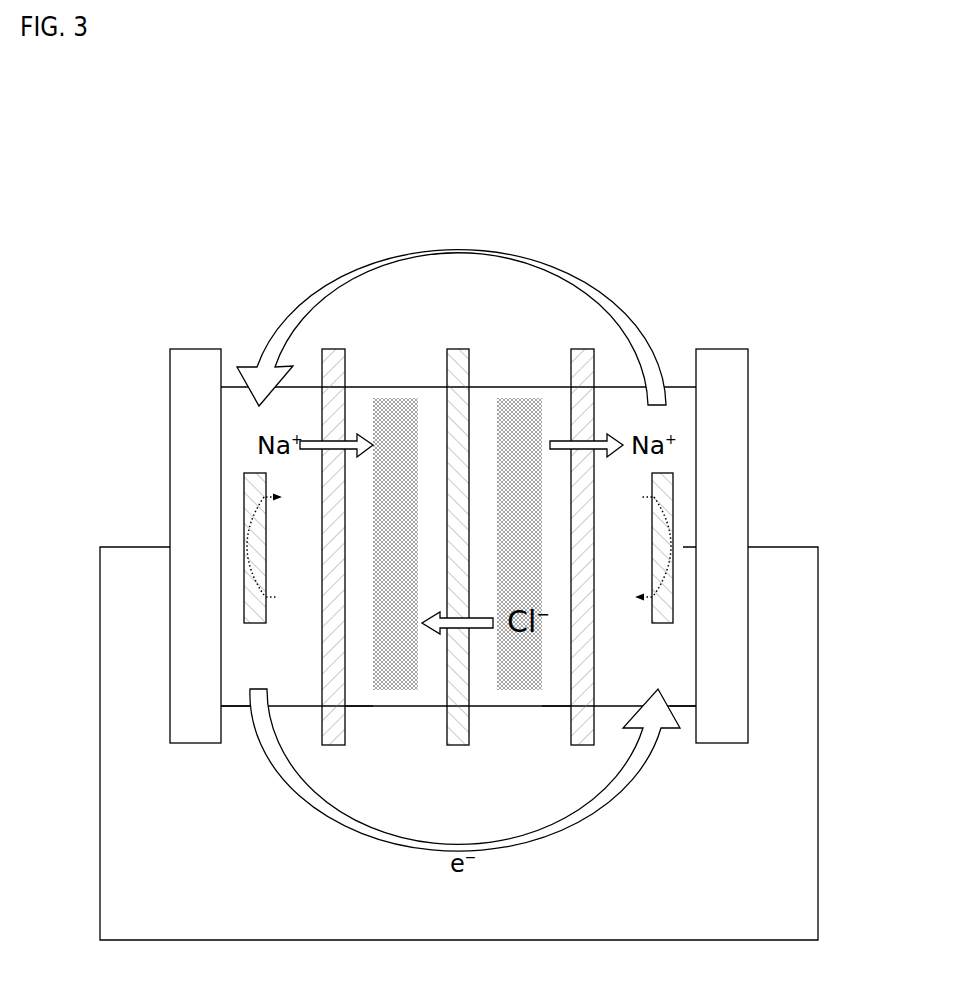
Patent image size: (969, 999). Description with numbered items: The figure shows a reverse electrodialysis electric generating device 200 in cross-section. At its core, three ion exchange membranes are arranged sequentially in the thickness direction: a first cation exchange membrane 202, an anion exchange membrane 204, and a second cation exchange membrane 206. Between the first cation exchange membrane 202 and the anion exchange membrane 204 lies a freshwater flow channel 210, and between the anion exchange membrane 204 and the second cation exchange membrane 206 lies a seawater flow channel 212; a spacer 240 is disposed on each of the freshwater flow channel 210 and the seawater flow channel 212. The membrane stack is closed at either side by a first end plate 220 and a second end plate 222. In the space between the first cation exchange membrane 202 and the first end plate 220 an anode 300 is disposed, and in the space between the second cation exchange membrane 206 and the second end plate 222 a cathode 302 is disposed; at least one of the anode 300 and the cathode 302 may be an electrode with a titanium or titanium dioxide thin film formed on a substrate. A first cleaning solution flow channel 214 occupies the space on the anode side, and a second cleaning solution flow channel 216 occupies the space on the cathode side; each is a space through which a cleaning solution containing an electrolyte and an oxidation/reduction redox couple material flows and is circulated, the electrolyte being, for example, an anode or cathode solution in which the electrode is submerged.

The electrochemical cell 200 is at (476, 126).
The first cation exchange membrane 202 is at (333, 349).
The anion exchange membrane 204 is at (458, 349).
The second cation exchange membrane 206 is at (583, 349).
The freshwater flow channel 210 is at (362, 678).
The seawater flow channel 212 is at (555, 678).
The first cleaning solution flow channel 214 is at (233, 678).
The second cleaning solution flow channel 216 is at (683, 678).
The first end plate 220 is at (170, 366).
The second end plate 222 is at (748, 366).
The spacer 240 is at (398, 398).
The anode 300 is at (244, 498).
The cathode 302 is at (673, 498).